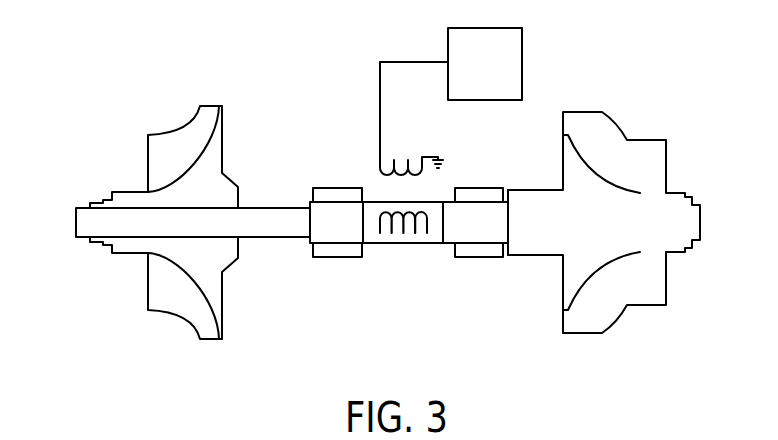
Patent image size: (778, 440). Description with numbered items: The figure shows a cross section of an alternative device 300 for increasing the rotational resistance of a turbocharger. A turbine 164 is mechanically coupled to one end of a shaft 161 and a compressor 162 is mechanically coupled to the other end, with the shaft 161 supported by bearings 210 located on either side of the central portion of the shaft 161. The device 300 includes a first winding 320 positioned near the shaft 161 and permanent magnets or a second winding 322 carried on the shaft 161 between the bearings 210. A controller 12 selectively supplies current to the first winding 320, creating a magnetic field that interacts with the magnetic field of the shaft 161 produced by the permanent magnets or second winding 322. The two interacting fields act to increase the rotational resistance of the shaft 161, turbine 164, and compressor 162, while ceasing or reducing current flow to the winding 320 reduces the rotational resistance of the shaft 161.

The controller 12 is at (497, 74).
The shaft 161 is at (252, 237).
The compressor 162 is at (208, 339).
The turbine 164 is at (580, 333).
The bearings 210 is at (333, 188).
The device for increasing rotational resistance of a turbocharger 300 is at (664, 56).
The first winding 320 is at (392, 178).
The permanent magnets or second winding 322 is at (423, 237).